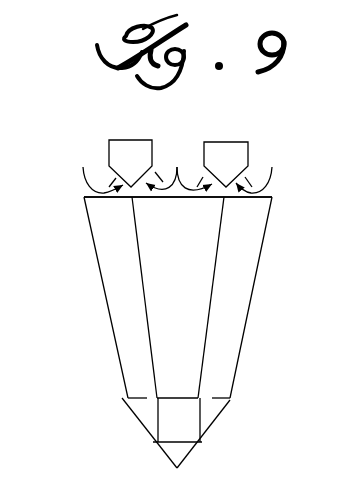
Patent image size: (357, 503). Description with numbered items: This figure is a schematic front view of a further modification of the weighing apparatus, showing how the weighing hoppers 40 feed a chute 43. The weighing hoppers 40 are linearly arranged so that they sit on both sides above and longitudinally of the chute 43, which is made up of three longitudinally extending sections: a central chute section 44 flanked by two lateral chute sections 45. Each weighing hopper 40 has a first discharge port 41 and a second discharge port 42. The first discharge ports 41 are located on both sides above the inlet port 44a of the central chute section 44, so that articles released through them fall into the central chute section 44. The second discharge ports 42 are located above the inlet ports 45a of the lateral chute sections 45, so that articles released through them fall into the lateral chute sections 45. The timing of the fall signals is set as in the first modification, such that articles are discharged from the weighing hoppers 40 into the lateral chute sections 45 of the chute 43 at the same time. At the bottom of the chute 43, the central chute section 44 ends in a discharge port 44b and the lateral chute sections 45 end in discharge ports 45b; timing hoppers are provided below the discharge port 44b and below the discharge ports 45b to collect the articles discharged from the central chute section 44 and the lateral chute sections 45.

The weighing hopper 40 is at (124, 140).
The first discharge port 41 is at (179, 164).
The second discharge port 42 is at (175, 168).
The chute 43 is at (252, 323).
The central chute section 44 is at (155, 323).
The inlet port of the central chute section 44a is at (182, 194).
The discharge port of the central chute section 44b is at (182, 403).
The lateral chute section 45 is at (105, 298).
The inlet port of the lateral chute section 45a is at (93, 193).
The discharge port of the lateral chute section 45b is at (145, 403).